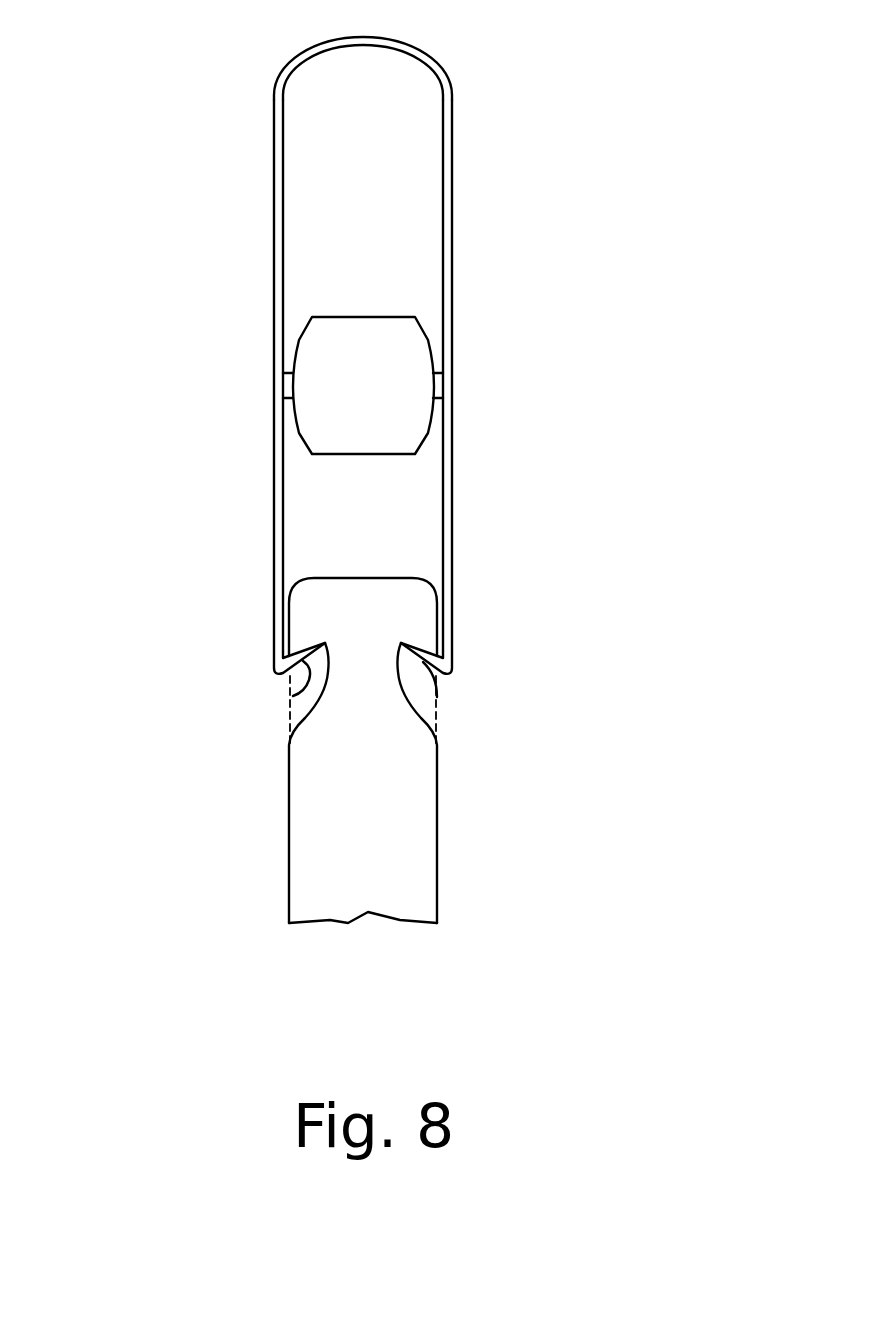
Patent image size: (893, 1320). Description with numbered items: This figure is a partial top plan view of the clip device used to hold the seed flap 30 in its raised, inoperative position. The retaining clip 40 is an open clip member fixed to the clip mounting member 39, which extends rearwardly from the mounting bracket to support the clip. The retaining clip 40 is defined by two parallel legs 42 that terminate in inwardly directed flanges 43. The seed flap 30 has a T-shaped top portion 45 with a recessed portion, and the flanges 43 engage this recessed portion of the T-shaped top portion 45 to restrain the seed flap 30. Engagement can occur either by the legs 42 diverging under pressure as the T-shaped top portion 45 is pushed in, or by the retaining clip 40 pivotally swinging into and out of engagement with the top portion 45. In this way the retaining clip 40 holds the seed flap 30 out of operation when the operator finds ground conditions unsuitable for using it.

The retaining clip 40 is at (443, 167).
The clip mounting member 39 is at (408, 348).
The legs 42 is at (274, 488).
The inwardly directed flanges 43 is at (293, 696).
The T-shaped top portion 45 is at (422, 629).
The seed flap 30 is at (425, 875).